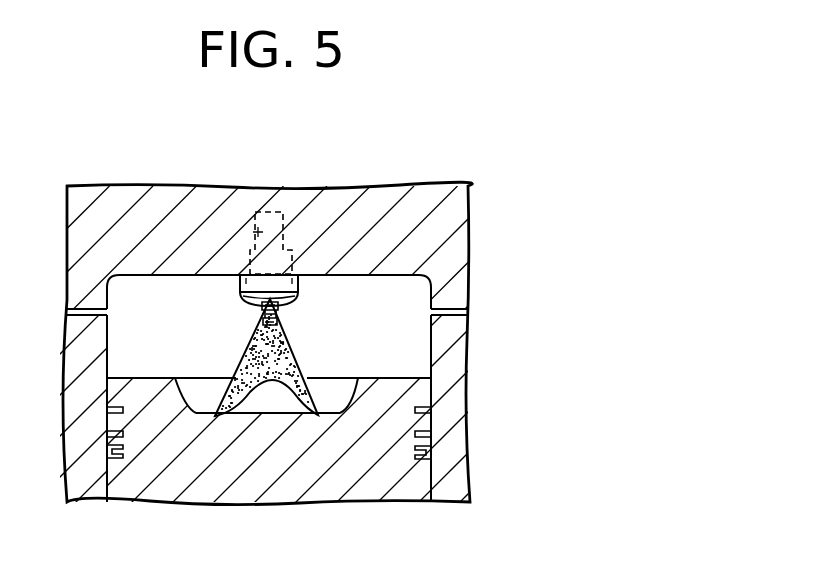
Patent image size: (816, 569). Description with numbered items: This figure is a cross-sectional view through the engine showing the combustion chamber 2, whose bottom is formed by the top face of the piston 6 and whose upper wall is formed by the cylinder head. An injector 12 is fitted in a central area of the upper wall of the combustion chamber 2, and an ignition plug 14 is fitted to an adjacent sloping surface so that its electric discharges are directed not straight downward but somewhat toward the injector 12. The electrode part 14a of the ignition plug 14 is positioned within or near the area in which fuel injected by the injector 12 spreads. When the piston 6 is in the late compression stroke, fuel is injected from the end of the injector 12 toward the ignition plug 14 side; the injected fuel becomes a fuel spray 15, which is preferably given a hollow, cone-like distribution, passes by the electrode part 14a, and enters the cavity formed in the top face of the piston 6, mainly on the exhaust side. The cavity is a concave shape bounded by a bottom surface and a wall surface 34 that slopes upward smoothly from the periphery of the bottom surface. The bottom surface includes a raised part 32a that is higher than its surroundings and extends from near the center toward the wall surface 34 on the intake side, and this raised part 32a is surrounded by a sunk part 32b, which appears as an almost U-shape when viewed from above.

The combustion chamber 2 is at (141, 309).
The piston 6 is at (383, 470).
The injector 12 is at (257, 228).
The ignition plug 14 is at (300, 286).
The electrode part 14a is at (280, 316).
The fuel spray 15 is at (250, 343).
The raised part 32a is at (291, 414).
The sunk part 32b is at (183, 415).
The wall surface 34 is at (190, 400).